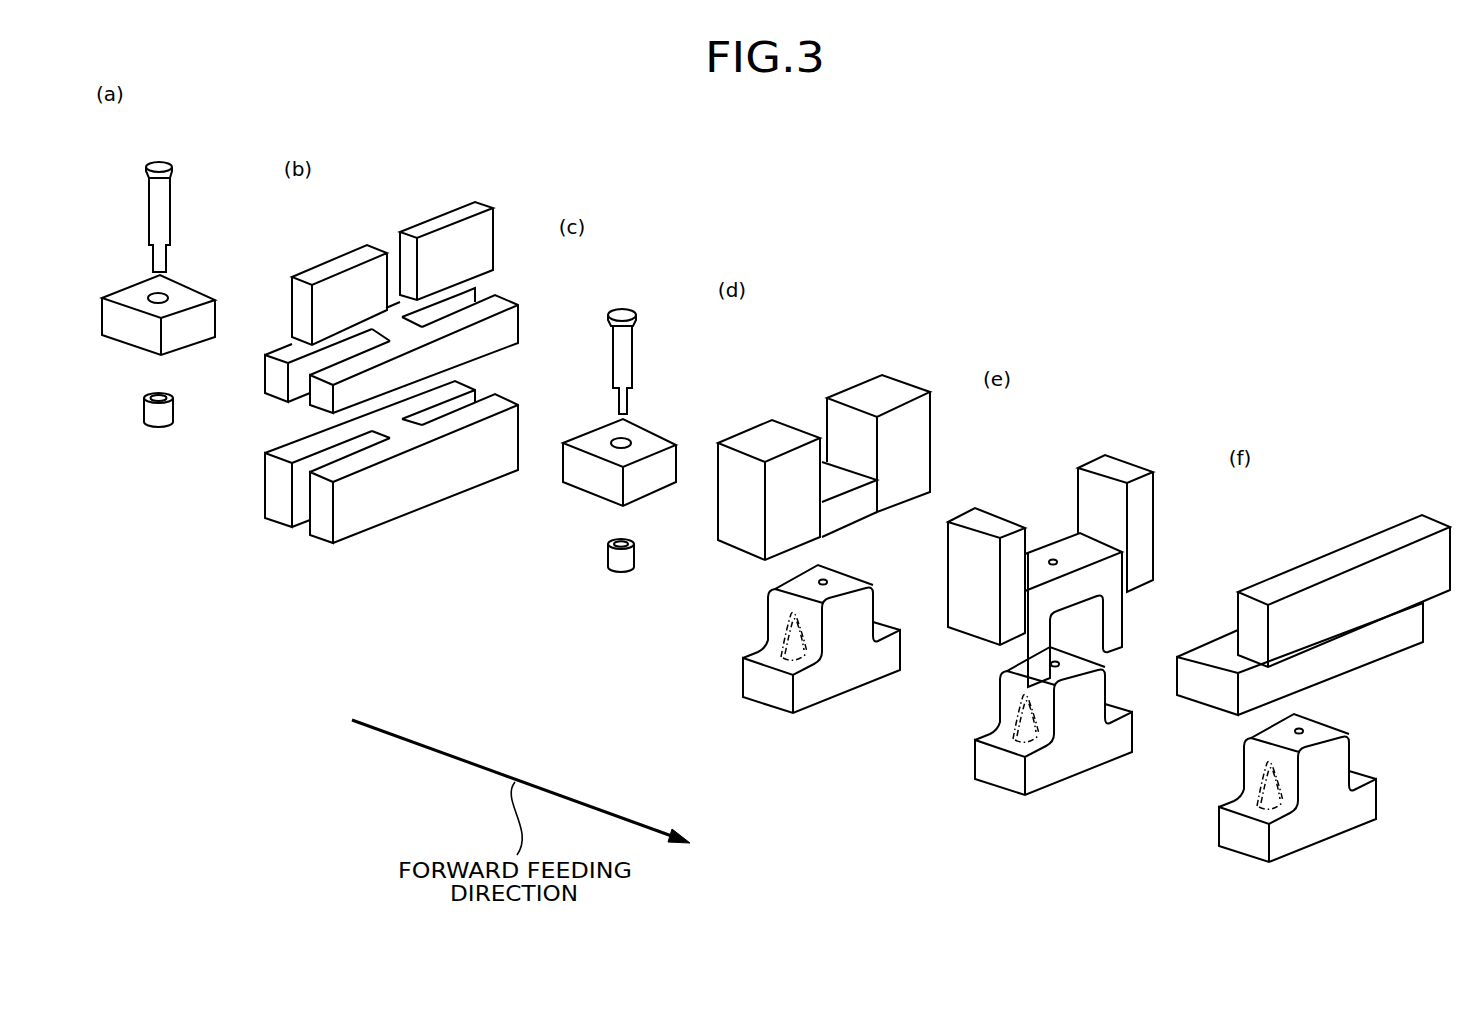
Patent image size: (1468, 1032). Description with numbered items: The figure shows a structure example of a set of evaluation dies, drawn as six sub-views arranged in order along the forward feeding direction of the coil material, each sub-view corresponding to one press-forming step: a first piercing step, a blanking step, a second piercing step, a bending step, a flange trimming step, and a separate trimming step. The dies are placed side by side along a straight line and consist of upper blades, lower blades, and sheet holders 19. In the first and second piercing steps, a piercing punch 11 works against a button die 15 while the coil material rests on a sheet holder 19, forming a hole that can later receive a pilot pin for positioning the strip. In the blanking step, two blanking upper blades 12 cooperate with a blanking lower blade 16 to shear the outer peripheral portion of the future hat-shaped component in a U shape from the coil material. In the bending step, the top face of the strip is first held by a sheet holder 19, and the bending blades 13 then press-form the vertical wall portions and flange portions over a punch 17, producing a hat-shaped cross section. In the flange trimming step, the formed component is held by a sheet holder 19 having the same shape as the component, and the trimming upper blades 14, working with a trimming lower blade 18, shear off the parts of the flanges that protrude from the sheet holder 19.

The piercing punch 11 is at (159, 162).
The blanking upper blades 12 is at (330, 262).
The bending blades 13 is at (758, 438).
The trimming upper blades 14 is at (992, 528).
The button die 15 is at (143, 401).
The blanking lower blade 16 is at (263, 483).
The punch 17 is at (853, 667).
The trimming lower blade 18 is at (1083, 750).
The sheet holder 19 is at (192, 283).